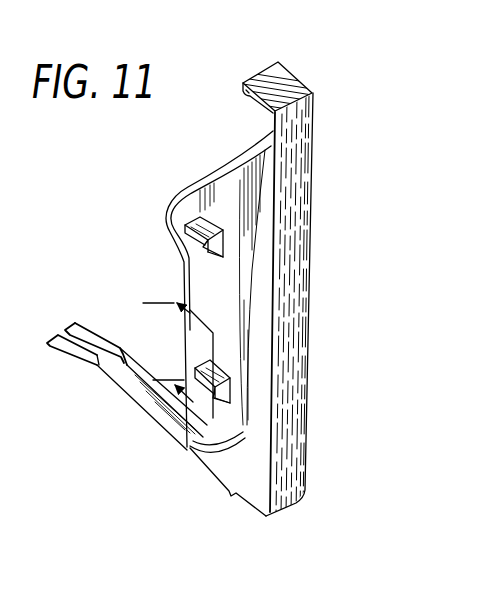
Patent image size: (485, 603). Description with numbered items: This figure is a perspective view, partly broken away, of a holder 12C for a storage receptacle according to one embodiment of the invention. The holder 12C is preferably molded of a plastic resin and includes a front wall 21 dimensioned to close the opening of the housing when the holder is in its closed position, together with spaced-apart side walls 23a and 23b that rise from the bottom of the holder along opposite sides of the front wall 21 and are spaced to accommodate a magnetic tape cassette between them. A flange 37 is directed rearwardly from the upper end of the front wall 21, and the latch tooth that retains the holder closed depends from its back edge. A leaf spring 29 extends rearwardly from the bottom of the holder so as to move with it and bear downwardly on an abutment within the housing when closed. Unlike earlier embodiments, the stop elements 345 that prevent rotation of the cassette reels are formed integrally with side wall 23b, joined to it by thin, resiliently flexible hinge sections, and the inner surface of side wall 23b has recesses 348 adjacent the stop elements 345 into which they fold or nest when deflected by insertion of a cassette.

The holder 12C is at (324, 266).
The front wall 21 is at (308, 200).
The flange 37 is at (283, 72).
The side wall 23b is at (222, 167).
The side wall 23a is at (218, 473).
The stop elements 345 is at (198, 221).
The recesses 348 is at (218, 262).
The leaf spring 29 is at (137, 398).